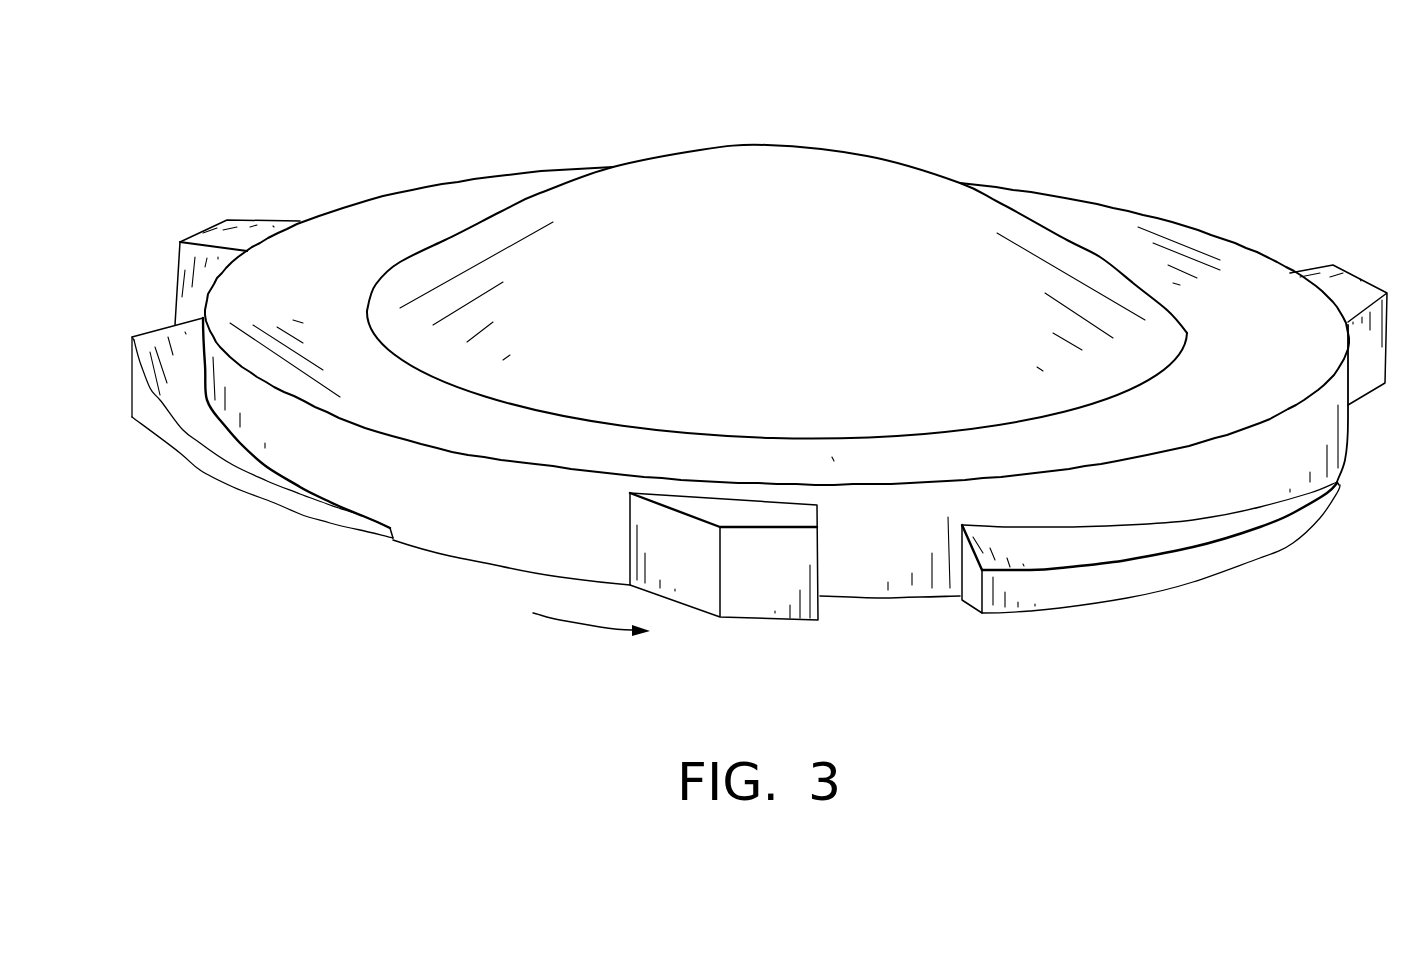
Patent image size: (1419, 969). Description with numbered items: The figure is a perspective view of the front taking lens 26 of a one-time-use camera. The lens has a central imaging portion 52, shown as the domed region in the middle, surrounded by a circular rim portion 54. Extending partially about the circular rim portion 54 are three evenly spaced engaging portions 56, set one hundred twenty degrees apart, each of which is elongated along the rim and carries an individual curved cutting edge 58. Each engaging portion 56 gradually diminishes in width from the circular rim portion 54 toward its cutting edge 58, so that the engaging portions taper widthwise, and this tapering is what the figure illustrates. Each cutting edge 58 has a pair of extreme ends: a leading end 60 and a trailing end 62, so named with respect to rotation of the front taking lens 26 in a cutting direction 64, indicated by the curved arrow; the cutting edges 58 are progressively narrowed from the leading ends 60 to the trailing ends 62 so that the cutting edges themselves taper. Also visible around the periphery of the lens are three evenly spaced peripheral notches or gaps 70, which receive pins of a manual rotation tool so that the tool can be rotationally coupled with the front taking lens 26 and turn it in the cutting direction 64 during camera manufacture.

The front taking lens 26 is at (615, 108).
The central imaging portion 52 is at (872, 158).
The circular rim portion 54 is at (1062, 205).
The engaging portion 56 is at (158, 496).
The curved cutting edge 58 is at (262, 496).
The leading end 60 is at (393, 537).
The trailing end 62 is at (140, 335).
The cutting direction 64 is at (583, 630).
The peripheral notch 70 is at (187, 305).